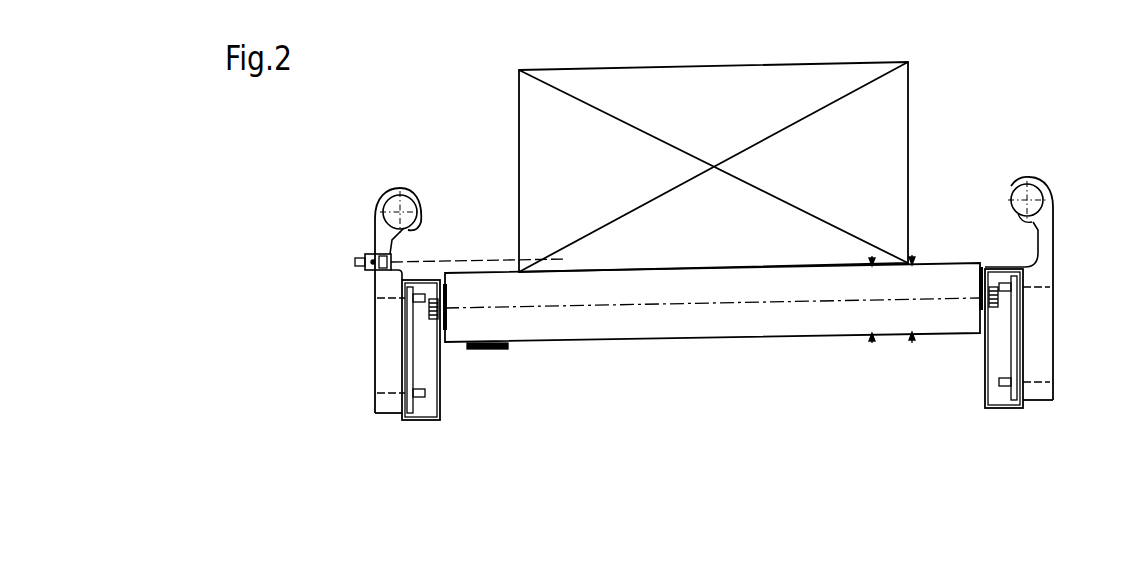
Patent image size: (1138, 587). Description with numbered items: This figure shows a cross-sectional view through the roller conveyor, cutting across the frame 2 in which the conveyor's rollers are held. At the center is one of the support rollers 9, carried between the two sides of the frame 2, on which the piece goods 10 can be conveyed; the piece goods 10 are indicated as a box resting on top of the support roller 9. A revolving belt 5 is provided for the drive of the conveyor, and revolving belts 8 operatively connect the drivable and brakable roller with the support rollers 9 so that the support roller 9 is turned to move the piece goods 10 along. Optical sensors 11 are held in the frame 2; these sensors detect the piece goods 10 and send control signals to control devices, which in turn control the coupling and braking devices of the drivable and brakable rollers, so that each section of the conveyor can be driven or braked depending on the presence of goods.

The frame 2 is at (1003, 327).
The revolving belt 5 is at (490, 350).
The revolving belts 8 is at (868, 337).
The support rollers 9 is at (945, 273).
The piece goods 10 is at (890, 122).
The optical sensors 11 is at (368, 258).